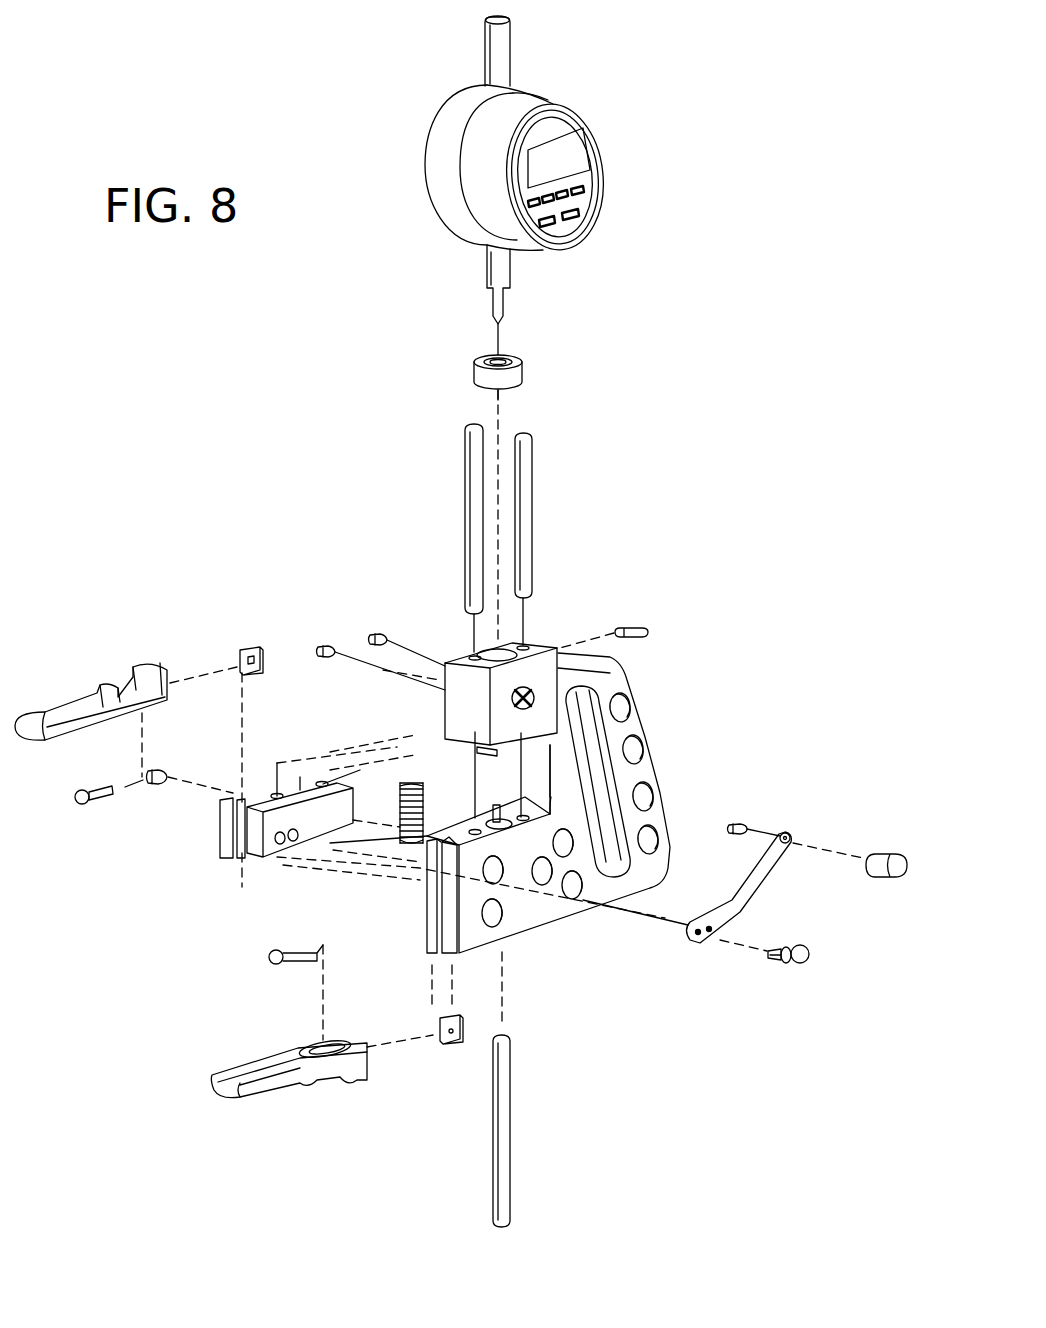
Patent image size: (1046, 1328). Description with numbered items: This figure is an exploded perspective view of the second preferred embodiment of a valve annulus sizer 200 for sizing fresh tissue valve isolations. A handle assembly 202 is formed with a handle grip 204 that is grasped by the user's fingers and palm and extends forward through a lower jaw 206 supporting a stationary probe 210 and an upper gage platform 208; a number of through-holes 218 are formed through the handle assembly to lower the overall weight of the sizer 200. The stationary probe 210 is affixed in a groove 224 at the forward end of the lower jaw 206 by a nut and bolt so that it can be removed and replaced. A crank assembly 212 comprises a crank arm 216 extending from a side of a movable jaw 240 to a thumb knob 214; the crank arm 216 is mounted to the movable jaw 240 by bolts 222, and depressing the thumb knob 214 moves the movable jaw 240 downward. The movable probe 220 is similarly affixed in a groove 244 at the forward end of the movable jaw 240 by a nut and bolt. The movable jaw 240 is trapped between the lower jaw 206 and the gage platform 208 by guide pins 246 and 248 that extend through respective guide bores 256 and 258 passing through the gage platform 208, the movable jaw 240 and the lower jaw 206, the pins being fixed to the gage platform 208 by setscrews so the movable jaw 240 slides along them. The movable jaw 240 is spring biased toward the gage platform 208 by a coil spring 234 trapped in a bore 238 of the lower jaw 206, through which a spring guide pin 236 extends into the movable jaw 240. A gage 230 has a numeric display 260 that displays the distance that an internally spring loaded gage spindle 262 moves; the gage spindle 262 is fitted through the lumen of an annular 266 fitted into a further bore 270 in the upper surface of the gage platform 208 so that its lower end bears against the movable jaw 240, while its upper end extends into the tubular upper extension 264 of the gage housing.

The valve annulus sizer 200 is at (246, 307).
The handle assembly 202 is at (697, 787).
The handle grip 204 is at (610, 772).
The lower jaw 206 is at (533, 923).
The gage platform 208 is at (450, 690).
The stationary probe 210 is at (331, 1108).
The crank assembly 212 is at (816, 918).
The thumb knob 214 is at (887, 850).
The crank arm 216 is at (740, 893).
The holes 218 is at (650, 748).
The movable probe 220 is at (79, 657).
The bolts 222 is at (783, 972).
The groove 224 is at (430, 962).
The gage 230 is at (620, 196).
The coil spring 234 is at (397, 797).
The spring guide pin 236 is at (505, 1130).
The bore 238 is at (493, 804).
The movable jaw 240 is at (205, 858).
The groove 244 is at (240, 857).
The guide pin 246 is at (462, 456).
The guide pin 248 is at (532, 475).
The guide bore 256 is at (470, 641).
The guide bore 258 is at (547, 638).
The numeric display 260 is at (582, 160).
The gage spindle 262 is at (513, 312).
The tubular upper extension 264 is at (503, 63).
The annular 266 is at (528, 375).
The further bore 270 is at (517, 645).